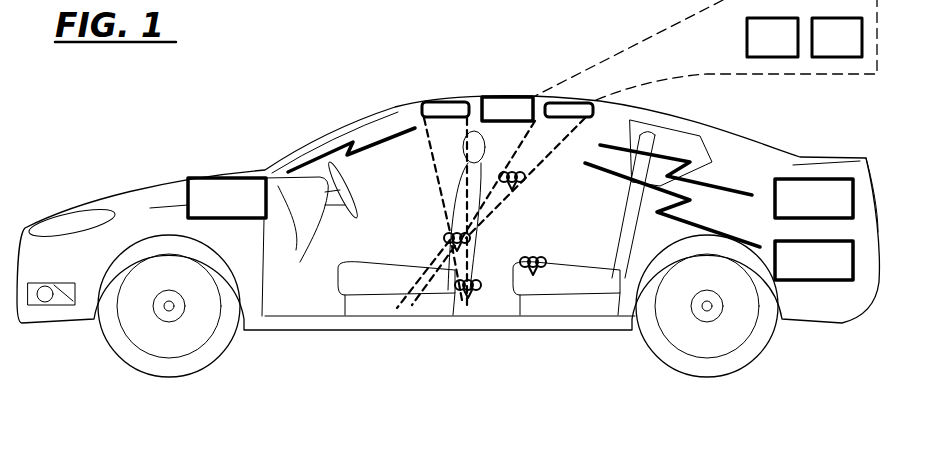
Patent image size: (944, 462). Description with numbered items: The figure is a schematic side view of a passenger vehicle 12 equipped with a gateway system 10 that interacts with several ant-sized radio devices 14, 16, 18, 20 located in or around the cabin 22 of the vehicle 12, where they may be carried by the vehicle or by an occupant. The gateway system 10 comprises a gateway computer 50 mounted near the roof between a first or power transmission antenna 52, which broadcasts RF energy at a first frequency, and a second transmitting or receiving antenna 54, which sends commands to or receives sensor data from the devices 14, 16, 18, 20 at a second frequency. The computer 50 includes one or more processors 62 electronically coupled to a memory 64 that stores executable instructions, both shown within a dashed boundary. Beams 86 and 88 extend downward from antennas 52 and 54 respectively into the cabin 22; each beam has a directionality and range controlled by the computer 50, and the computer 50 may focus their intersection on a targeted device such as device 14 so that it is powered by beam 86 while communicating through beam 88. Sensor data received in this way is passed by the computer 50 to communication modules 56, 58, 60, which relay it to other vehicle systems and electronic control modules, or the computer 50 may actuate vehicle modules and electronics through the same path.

The gateway system 10 is at (416, 115).
The vehicle 12 is at (128, 186).
The ant-sized radio device 14 is at (472, 241).
The ant-sized radio device 16 is at (479, 291).
The ant-sized radio device 18 is at (526, 180).
The ant-sized radio device 20 is at (538, 270).
The cabin 22 is at (320, 289).
The gateway computer 50 is at (520, 96).
The power transmission antenna 52 is at (444, 101).
The transmitting or receiving antenna 54 is at (597, 112).
The communication module 56 is at (227, 198).
The communication module 58 is at (814, 198).
The communication module 60 is at (814, 260).
The processor 62 is at (772, 37).
The memory 64 is at (837, 37).
The beam 86 is at (438, 188).
The beam 88 is at (446, 258).